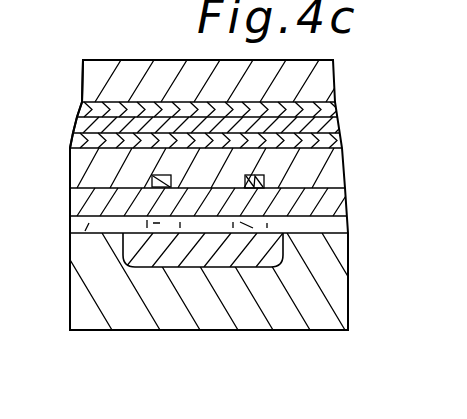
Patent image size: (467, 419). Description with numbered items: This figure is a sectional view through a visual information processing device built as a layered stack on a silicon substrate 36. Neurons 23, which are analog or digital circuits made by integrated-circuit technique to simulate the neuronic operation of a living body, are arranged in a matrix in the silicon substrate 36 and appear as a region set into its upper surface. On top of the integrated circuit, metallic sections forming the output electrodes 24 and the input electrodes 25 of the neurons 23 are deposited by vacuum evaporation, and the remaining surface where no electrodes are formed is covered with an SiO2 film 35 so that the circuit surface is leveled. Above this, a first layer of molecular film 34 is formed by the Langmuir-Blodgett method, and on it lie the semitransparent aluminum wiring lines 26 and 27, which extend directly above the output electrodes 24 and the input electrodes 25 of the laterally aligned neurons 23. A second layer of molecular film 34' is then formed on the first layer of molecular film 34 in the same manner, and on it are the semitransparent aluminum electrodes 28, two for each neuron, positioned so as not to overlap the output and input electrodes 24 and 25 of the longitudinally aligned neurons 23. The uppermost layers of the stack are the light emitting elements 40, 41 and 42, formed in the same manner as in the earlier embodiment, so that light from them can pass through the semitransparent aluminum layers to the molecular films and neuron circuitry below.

The neurons 23 is at (267, 251).
The output electrodes 24 is at (147, 212).
The input electrodes 25 is at (230, 213).
The semitransparent aluminum wiring line 26 is at (168, 175).
The semitransparent aluminum wiring line 27 is at (258, 175).
The semitransparent aluminum electrode 28 is at (72, 132).
The first layer of molecular film 34 is at (38, 213).
The second layer of molecular film 34' is at (40, 125).
The SiO2 film 35 is at (72, 257).
The silicon substrate 36 is at (318, 302).
The light emitting element 40 is at (330, 126).
The light emitting element 41 is at (327, 105).
The light emitting element 42 is at (320, 78).